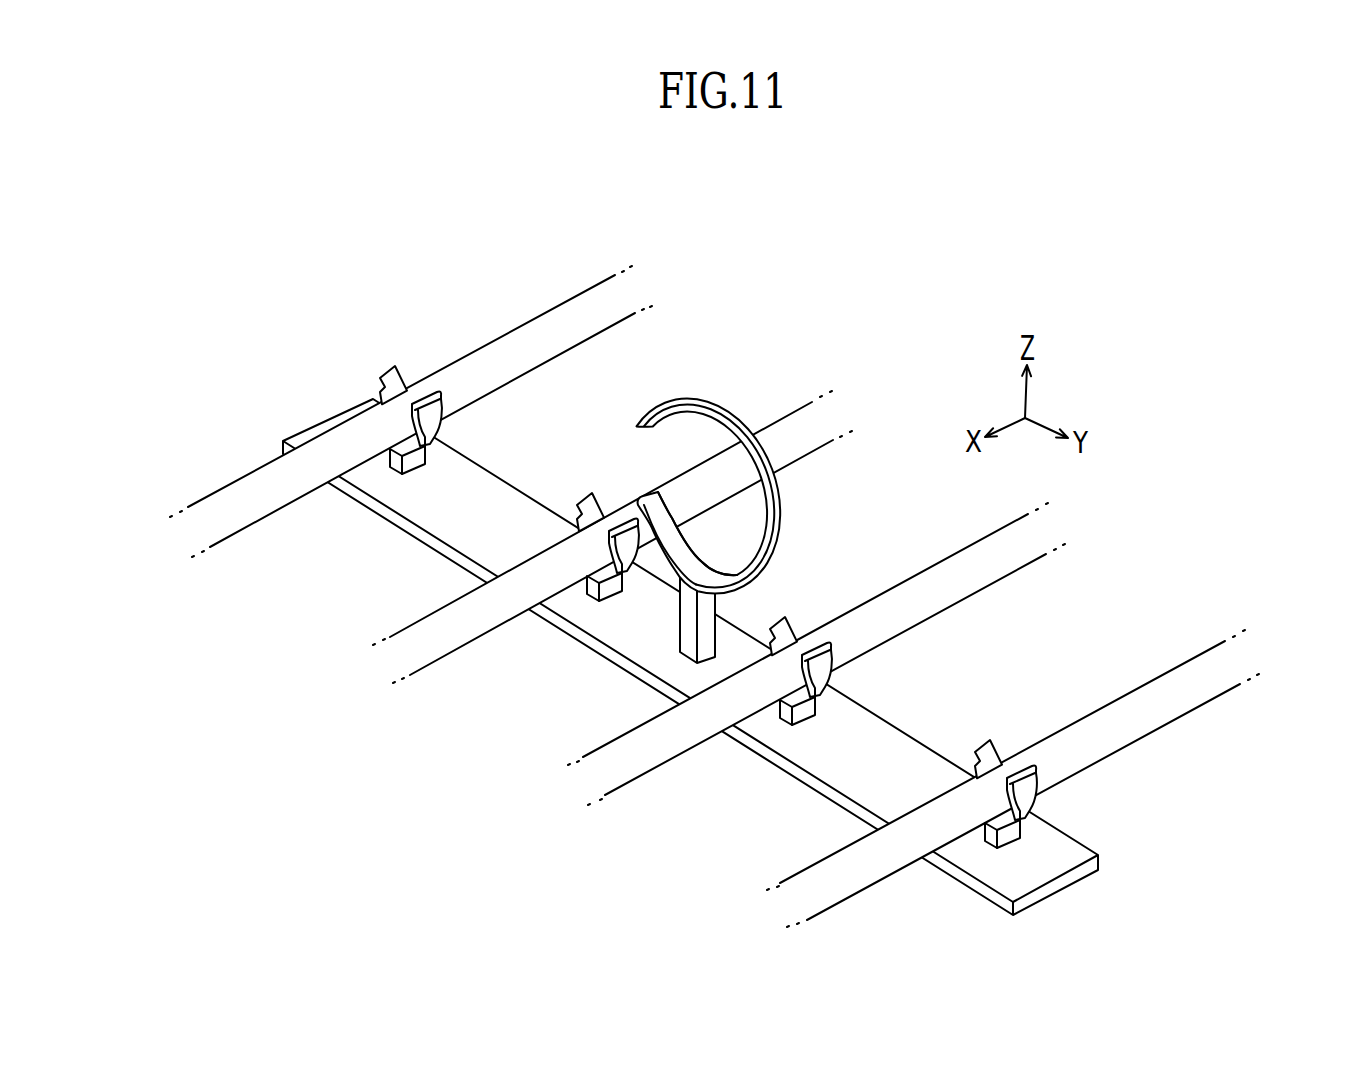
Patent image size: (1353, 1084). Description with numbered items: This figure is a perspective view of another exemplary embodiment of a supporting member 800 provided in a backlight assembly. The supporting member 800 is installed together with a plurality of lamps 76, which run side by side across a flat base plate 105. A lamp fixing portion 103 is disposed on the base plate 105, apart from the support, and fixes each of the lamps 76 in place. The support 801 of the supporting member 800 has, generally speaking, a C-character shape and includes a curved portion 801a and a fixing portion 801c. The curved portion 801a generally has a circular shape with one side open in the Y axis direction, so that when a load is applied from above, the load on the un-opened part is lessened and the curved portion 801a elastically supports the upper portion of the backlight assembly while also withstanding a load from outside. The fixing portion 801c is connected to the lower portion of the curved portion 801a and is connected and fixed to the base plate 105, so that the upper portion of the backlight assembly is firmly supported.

The lamp 76 is at (1167, 724).
The base plate 105 is at (1055, 852).
The lamp fixing portion 103 is at (990, 835).
The supporting member 800 is at (732, 519).
The support 801 is at (740, 416).
The curved portion 801a is at (805, 558).
The fixing portion 801c is at (688, 622).